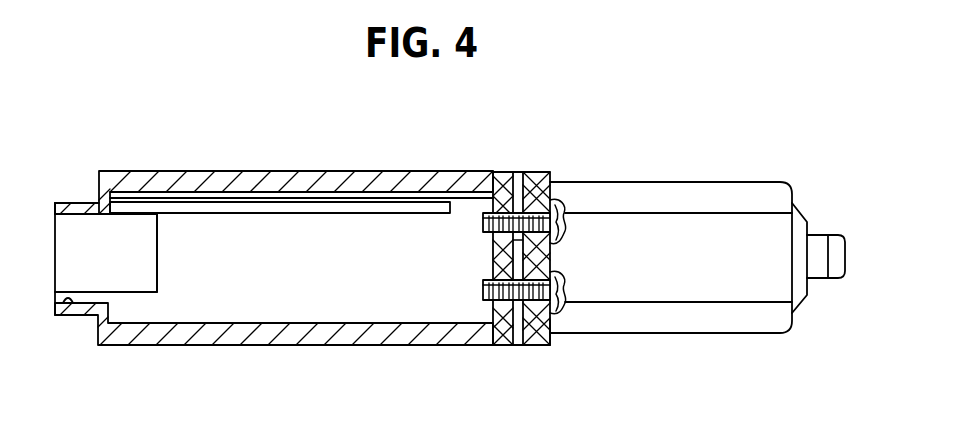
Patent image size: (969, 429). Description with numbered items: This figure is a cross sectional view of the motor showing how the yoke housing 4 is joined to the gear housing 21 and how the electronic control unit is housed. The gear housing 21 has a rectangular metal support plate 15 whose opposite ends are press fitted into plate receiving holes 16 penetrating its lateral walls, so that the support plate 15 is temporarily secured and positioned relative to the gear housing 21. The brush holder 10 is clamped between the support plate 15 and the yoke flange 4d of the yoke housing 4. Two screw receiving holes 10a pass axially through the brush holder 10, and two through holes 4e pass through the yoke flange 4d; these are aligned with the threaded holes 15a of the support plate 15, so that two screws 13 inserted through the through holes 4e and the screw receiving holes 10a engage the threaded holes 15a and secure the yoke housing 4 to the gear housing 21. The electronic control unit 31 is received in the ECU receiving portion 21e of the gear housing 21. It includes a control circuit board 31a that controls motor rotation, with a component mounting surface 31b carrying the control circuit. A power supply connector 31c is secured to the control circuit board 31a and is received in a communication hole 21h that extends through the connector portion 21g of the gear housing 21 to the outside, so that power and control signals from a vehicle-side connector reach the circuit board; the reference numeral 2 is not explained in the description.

The syringe / connector end 2 is at (800, 208).
The yoke housing 4 is at (735, 192).
The yoke flange 4d is at (553, 340).
The through holes 4e is at (562, 205).
The brush holder 10 is at (492, 249).
The screw receiving holes 10a is at (522, 172).
The screws 13 is at (565, 236).
The support plate 15 is at (490, 278).
The threaded holes 15a is at (483, 222).
The plate receiving holes 16 is at (498, 172).
The gear housing 21 is at (146, 184).
The ECU receiving portion 21e is at (271, 196).
The connector portion 21g is at (63, 203).
The communication hole 21h is at (68, 304).
The electronic control unit 31 is at (175, 208).
The control circuit board 31a is at (236, 214).
The component mounting surface 31b is at (330, 214).
The power supply connector 31c is at (157, 278).